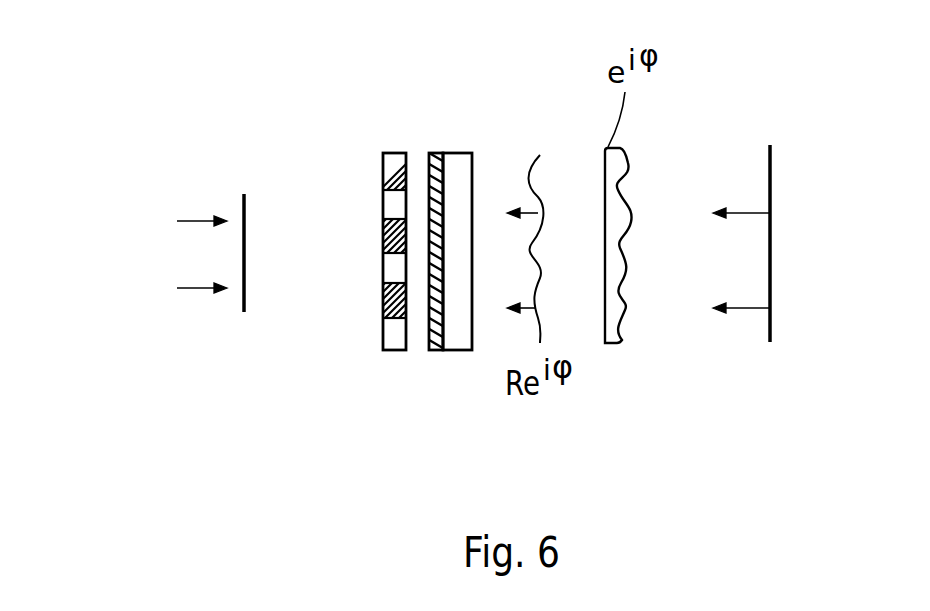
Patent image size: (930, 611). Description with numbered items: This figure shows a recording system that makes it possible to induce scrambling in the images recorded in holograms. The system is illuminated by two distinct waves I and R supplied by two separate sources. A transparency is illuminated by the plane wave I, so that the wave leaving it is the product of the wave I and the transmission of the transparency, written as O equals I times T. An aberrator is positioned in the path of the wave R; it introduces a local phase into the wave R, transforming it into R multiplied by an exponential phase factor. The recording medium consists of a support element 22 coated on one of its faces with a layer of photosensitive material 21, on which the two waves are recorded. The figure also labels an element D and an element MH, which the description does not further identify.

The plane wave I is at (210, 241).
The diffuser or detector transmission mask D is at (393, 152).
The master hologram MH is at (433, 152).
The layer of photosensitive material 21 is at (435, 350).
The support element 22 is at (465, 294).
The wave R is at (746, 222).